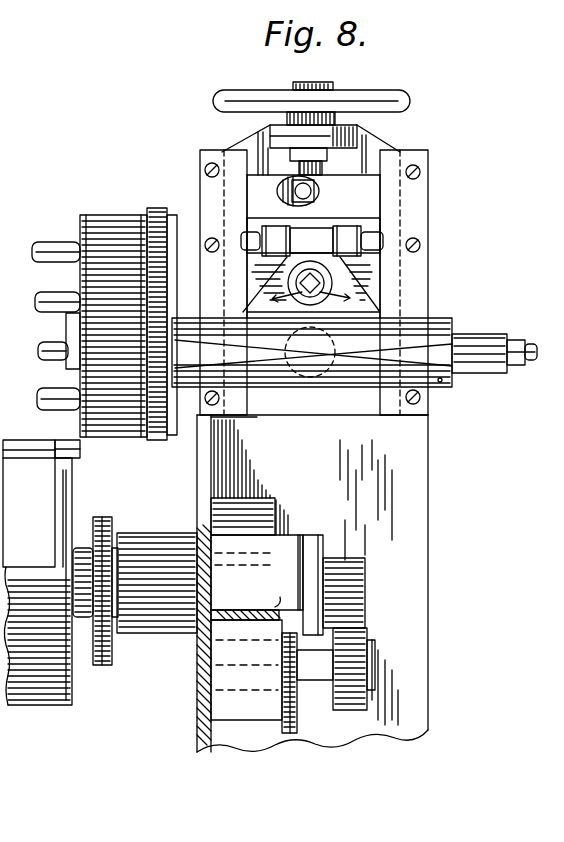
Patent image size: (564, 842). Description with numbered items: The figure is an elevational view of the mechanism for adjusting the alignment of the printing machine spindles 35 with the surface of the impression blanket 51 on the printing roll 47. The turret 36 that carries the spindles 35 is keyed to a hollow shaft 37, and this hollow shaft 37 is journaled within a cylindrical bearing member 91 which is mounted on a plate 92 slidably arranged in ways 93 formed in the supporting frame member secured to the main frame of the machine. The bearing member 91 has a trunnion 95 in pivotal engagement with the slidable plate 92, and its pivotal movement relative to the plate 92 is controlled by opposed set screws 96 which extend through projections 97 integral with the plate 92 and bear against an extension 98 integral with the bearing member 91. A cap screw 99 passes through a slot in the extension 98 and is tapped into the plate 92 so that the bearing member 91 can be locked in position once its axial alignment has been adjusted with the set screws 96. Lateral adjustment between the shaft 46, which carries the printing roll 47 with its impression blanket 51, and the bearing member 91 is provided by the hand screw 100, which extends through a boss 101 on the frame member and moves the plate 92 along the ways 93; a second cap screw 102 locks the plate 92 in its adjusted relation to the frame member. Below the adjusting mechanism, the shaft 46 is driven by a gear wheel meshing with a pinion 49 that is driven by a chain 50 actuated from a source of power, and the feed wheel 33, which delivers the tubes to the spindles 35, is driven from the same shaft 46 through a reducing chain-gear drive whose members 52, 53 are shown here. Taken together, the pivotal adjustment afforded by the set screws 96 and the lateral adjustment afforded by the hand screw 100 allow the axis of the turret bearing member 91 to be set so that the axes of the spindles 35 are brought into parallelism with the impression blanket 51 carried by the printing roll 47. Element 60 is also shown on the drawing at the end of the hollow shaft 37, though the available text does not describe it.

The feed wheel 33 is at (107, 208).
The spindles 35 is at (50, 259).
The turret 36 is at (155, 207).
The hollow shaft 37 is at (475, 337).
The shaft 46 is at (363, 579).
The printing roll 47 is at (47, 703).
The pinion 49 is at (361, 711).
The chain 50 is at (293, 737).
The impression blanket 51 is at (41, 503).
The reducing chain-gear drive 52 is at (90, 576).
The reducing chain-gear drive 53 is at (113, 652).
The shaft end 60 is at (518, 342).
The cylindrical bearing member 91 is at (446, 382).
The plate 92 is at (382, 206).
The ways 93 is at (236, 165).
The trunnion 95 is at (292, 370).
The set screws 96 is at (252, 250).
The projections 97 is at (262, 236).
The extension 98 is at (320, 238).
The cap screw 99 is at (338, 284).
The hand screw 100 is at (227, 95).
The boss 101 is at (282, 133).
The cap screw 102 is at (316, 191).